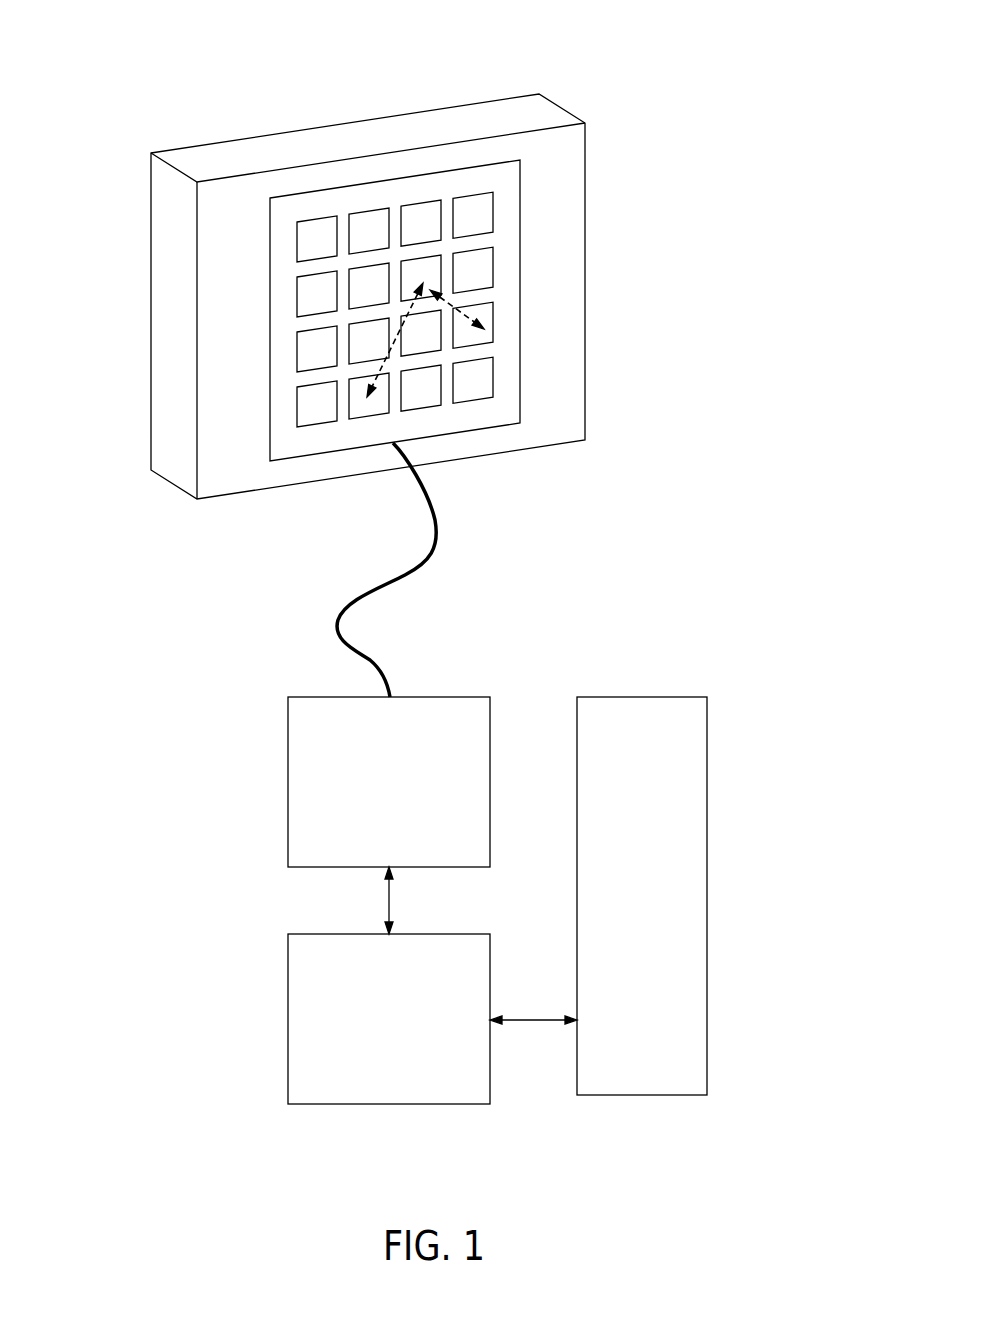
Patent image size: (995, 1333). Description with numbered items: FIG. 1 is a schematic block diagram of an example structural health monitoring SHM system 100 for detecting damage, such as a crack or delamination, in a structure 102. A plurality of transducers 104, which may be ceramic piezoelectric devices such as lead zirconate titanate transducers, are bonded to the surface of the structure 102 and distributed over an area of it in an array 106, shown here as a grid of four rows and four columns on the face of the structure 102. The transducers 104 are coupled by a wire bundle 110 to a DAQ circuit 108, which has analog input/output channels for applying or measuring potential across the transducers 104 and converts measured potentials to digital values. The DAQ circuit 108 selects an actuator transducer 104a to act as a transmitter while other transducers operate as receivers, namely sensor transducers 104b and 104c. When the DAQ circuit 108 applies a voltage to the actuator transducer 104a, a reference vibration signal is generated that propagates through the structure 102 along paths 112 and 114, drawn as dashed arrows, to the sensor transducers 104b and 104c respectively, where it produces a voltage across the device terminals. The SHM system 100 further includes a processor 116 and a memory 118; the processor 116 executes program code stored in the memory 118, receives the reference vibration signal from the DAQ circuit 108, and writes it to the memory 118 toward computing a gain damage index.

The SHM system 100 is at (127, 63).
The structure 102 is at (573, 409).
The transducers 104 is at (493, 212).
The actuator transducer 104a is at (425, 277).
The sensor transducer 104b is at (372, 405).
The sensor transducer 104c is at (474, 340).
The array 106 is at (520, 280).
The DAQ circuit 108 is at (288, 787).
The wire bundle 110 is at (438, 547).
The path 112 is at (397, 333).
The path 114 is at (457, 310).
The processor 116 is at (288, 1023).
The memory 118 is at (707, 890).